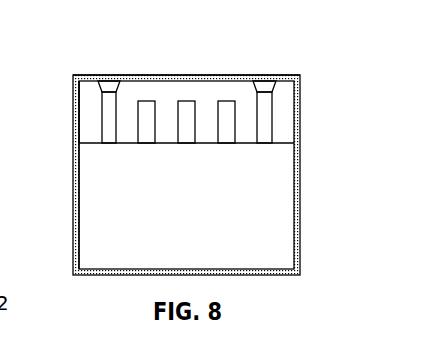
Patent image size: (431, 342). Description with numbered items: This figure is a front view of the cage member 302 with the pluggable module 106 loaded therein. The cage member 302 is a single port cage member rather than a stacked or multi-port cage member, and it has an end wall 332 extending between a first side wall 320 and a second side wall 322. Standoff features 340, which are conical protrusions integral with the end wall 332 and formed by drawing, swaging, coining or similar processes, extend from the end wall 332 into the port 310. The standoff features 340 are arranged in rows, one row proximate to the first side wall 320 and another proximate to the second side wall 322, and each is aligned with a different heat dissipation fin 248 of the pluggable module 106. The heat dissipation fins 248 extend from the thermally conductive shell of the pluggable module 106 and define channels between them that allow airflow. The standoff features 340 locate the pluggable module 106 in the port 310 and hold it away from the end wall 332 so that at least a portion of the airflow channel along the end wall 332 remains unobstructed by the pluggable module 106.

The cage member 302 is at (198, 149).
The end wall 332 is at (197, 75).
The standoff features 340 is at (109, 81).
The heat dissipation fins 248 is at (265, 110).
The second side wall 322 is at (300, 130).
The pluggable module 106 is at (271, 197).
The port 310 is at (88, 111).
The first side wall 320 is at (79, 121).